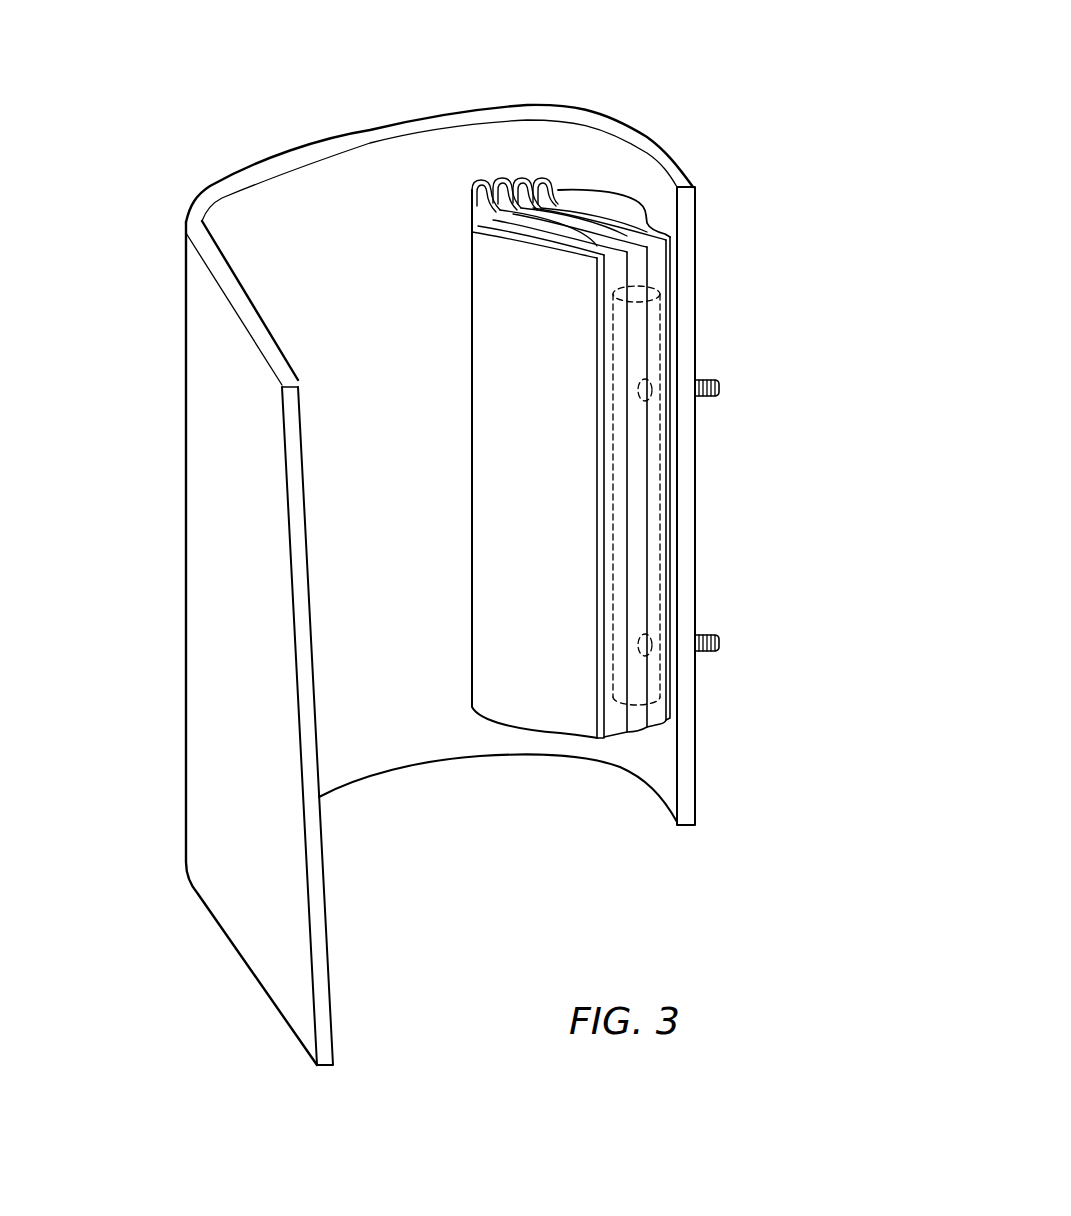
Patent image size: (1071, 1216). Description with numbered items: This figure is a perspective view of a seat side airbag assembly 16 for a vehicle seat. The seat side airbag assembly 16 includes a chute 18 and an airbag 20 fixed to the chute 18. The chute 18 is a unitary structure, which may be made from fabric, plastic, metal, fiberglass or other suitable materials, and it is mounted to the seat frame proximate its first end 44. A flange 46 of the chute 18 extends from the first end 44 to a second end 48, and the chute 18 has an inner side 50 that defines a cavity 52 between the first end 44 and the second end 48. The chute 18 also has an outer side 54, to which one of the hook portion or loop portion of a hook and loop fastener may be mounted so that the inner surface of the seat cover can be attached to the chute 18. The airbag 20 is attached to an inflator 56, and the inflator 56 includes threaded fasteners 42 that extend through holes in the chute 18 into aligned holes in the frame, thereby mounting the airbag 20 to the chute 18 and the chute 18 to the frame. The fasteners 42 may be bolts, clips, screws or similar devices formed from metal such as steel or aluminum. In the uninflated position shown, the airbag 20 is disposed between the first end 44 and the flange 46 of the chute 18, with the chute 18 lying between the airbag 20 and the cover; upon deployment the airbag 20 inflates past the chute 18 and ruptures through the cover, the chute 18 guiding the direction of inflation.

The seat side airbag assembly 16 is at (731, 70).
The chute 18 is at (177, 283).
The airbag 20 is at (465, 322).
The fasteners 42 is at (720, 388).
The first end 44 is at (685, 493).
The flange 46 is at (217, 399).
The second end 48 is at (316, 872).
The inner side 50 is at (345, 193).
The cavity 52 is at (405, 670).
The outer side 54 is at (213, 582).
The inflator 56 is at (660, 322).